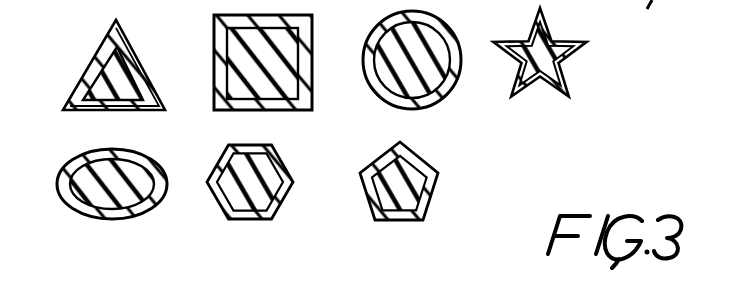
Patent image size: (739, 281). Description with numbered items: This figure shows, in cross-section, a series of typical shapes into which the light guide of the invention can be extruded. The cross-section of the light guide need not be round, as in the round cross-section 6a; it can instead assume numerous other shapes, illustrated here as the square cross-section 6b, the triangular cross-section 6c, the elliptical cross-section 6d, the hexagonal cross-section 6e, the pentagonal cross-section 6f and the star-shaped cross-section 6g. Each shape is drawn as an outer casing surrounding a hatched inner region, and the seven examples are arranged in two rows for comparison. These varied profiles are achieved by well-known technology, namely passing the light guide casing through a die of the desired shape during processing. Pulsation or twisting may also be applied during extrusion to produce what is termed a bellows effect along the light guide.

The round cross-section 6a is at (365, 47).
The square cross-section 6b is at (215, 52).
The triangular cross-section 6c is at (104, 52).
The elliptical cross-section 6d is at (68, 162).
The hexagonal cross-section 6e is at (215, 165).
The pentagonal cross-section 6f is at (361, 171).
The star-shaped cross-section 6g is at (536, 32).